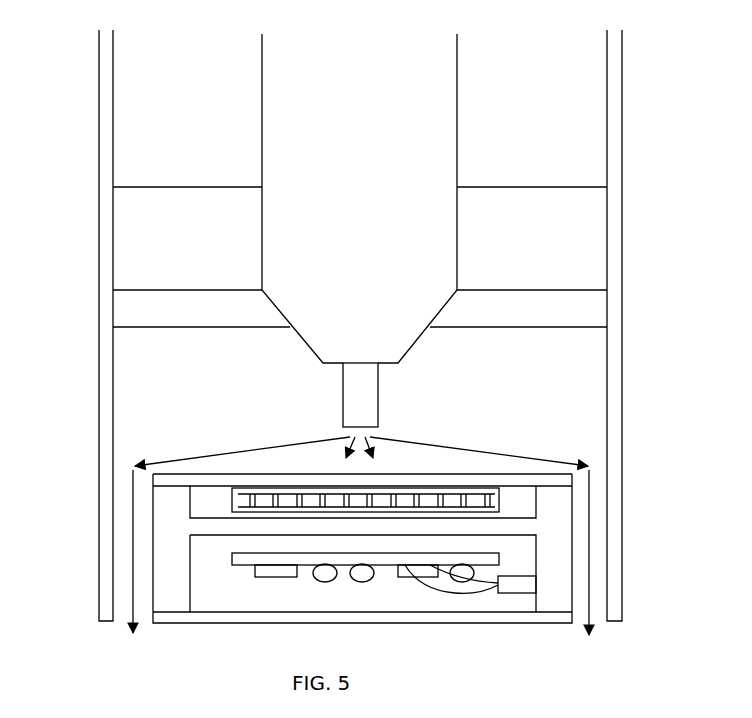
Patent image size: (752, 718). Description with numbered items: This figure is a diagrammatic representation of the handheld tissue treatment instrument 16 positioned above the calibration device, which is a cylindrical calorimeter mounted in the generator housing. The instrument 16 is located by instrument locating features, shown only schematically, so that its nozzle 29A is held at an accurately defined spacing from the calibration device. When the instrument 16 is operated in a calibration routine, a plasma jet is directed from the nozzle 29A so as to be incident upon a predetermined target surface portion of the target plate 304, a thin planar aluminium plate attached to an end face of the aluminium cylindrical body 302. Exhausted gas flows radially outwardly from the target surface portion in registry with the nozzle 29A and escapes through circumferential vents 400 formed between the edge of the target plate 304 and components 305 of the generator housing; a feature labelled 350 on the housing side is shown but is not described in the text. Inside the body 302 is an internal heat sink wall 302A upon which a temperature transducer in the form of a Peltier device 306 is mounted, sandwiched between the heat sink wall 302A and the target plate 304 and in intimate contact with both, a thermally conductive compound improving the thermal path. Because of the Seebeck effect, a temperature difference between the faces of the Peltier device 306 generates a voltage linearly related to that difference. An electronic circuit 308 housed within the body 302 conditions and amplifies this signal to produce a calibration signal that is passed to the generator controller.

The tissue treatment instrument 16 is at (445, 63).
The nozzle 29A is at (378, 388).
The cylindrical body 302 is at (560, 562).
The heat sink wall 302A is at (203, 527).
The target plate 304 is at (535, 472).
The components of the generator housing 305 is at (98, 358).
The Peltier device 306 is at (499, 505).
The electronic circuit 308 is at (243, 566).
The flow passage section 350 is at (125, 272).
The circumferential vents 400 is at (113, 594).